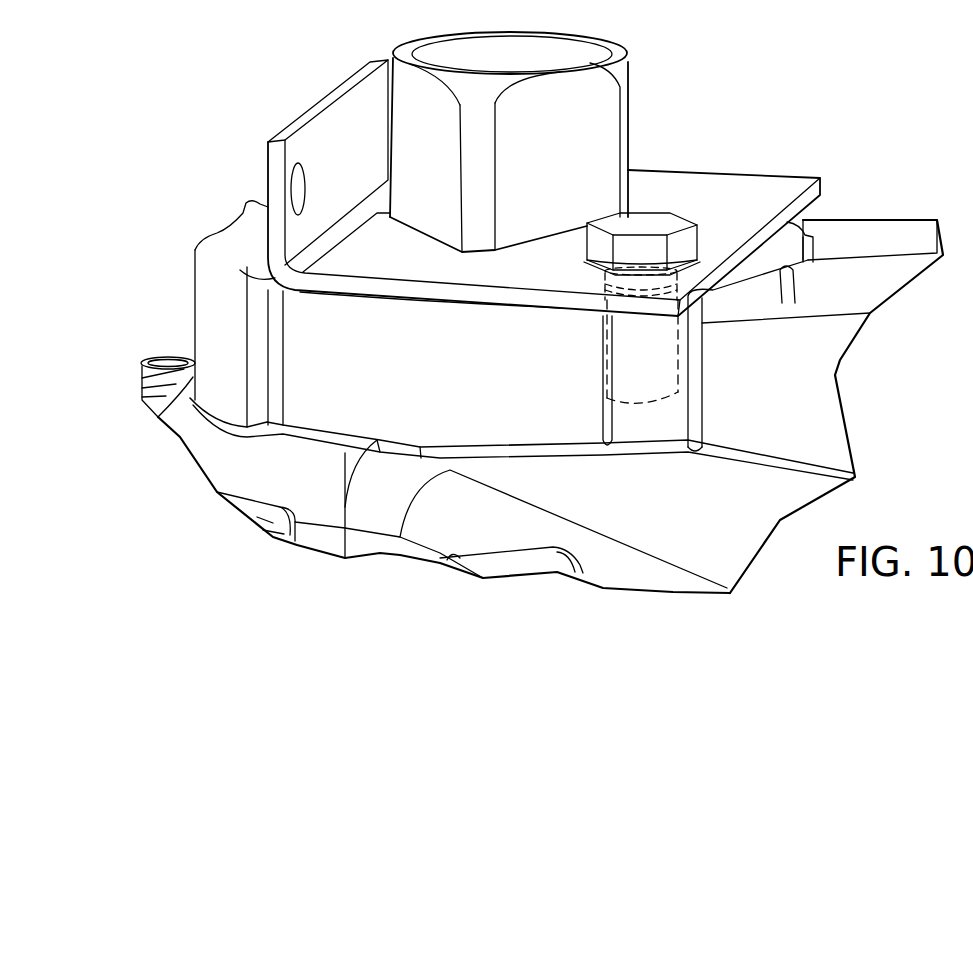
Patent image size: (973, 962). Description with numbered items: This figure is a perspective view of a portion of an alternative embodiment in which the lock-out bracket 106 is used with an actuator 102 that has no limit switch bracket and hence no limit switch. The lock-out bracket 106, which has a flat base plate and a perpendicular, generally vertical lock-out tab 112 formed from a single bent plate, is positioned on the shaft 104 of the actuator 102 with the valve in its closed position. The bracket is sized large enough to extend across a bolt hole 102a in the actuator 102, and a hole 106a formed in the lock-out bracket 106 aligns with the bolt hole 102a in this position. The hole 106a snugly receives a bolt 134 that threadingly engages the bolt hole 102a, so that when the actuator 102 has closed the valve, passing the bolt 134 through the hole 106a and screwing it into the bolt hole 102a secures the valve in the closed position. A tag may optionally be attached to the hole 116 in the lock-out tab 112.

The actuator 102 is at (193, 243).
The bolt hole 102a is at (633, 326).
The shaft 104 is at (610, 108).
The lock-out bracket 106 is at (487, 304).
The hole 106a is at (638, 300).
The lock-out tab 112 is at (268, 177).
The hole 116 is at (297, 190).
The bolt 134 is at (700, 253).